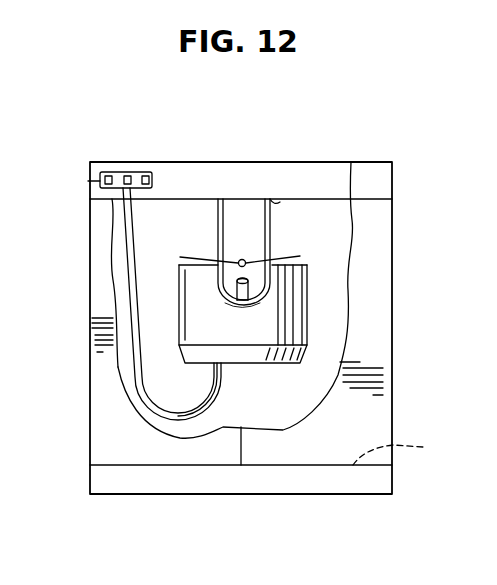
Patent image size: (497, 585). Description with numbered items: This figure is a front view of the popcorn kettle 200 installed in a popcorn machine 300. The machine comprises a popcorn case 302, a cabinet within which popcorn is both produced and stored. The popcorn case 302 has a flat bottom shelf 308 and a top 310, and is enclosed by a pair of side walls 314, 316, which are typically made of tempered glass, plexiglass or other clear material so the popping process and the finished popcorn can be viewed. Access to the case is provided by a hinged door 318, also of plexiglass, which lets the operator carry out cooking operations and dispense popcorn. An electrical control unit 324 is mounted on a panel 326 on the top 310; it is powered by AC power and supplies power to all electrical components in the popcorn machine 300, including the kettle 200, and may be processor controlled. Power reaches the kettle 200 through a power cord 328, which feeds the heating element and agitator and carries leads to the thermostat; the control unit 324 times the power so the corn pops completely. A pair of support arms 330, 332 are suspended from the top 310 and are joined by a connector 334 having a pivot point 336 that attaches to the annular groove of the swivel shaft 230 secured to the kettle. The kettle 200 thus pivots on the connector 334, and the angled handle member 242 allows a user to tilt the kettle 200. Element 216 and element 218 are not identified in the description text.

The popcorn kettle 200 is at (308, 292).
The probe tube 216 is at (198, 256).
The ribs 218 is at (302, 255).
The swivel shaft 230 is at (239, 304).
The angled handle member 242 is at (242, 259).
The popcorn machine 300 is at (320, 158).
The popcorn case 302 is at (378, 410).
The bottom shelf 308 is at (278, 450).
The top 310 is at (370, 162).
The side wall 314 is at (90, 228).
The side wall 316 is at (377, 277).
The hinged door 318 is at (92, 292).
The electrical control unit 324 is at (88, 181).
The panel 326 is at (123, 172).
The power cord 328 is at (135, 377).
The support arm 330 is at (217, 250).
The support arm 332 is at (273, 210).
The connector 334 is at (250, 303).
The pivot point 336 is at (250, 302).